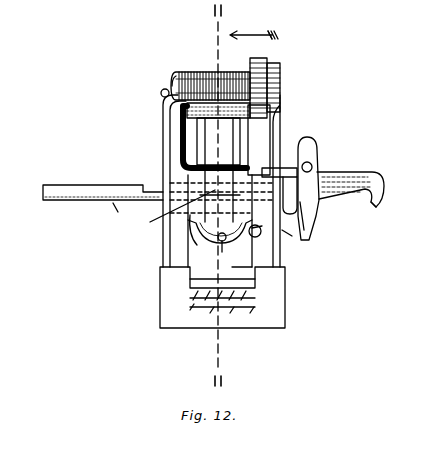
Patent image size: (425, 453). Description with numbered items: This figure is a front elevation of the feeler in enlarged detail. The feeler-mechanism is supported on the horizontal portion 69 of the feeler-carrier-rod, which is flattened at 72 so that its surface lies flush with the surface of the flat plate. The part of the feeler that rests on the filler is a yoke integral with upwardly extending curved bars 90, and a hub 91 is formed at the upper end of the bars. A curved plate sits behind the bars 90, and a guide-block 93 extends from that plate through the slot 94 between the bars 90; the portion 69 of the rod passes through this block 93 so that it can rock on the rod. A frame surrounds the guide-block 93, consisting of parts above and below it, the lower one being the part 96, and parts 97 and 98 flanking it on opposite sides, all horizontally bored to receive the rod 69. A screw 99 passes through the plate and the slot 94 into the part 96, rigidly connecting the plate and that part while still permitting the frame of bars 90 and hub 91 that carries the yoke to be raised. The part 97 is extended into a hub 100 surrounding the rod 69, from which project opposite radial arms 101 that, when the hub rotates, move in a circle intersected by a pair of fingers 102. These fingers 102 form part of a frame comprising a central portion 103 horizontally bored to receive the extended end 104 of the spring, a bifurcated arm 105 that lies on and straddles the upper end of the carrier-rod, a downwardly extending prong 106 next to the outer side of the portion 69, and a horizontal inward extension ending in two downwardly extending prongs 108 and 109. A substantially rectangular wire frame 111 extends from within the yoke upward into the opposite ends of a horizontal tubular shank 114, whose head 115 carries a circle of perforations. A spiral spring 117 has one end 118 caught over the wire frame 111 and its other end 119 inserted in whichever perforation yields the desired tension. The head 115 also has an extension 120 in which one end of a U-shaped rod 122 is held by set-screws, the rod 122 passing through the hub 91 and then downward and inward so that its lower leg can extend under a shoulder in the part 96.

The horizontal portion of feeler-carrier-rod 69 is at (226, 214).
The flattened part 72 is at (74, 194).
The curved bars 90 is at (145, 262).
The hub 91 is at (268, 110).
The guide-block 93 is at (215, 193).
The slot 94 is at (232, 267).
The lower frame part 96 is at (192, 233).
The side frame part 97 is at (307, 212).
The side frame part 98 is at (150, 222).
The screw 99 is at (222, 246).
The hub 100 is at (292, 168).
The radial arms 101 is at (266, 223).
The fingers 102 is at (316, 158).
The central portion 103 is at (313, 166).
The extended end of spring 104 is at (370, 172).
The bifurcated arm 105 is at (385, 185).
The downwardly extending prong 106 is at (297, 206).
The downwardly extending prong 108 is at (258, 232).
The downwardly extending prong 109 is at (292, 236).
The wire frame 111 is at (165, 148).
The tubular shank 114 is at (172, 76).
The head 115 is at (275, 60).
The spiral spring 117 is at (200, 72).
The spring end 118 is at (161, 92).
The spring end 119 is at (273, 37).
The extension 120 is at (280, 85).
The U-shaped rod 122 is at (180, 133).